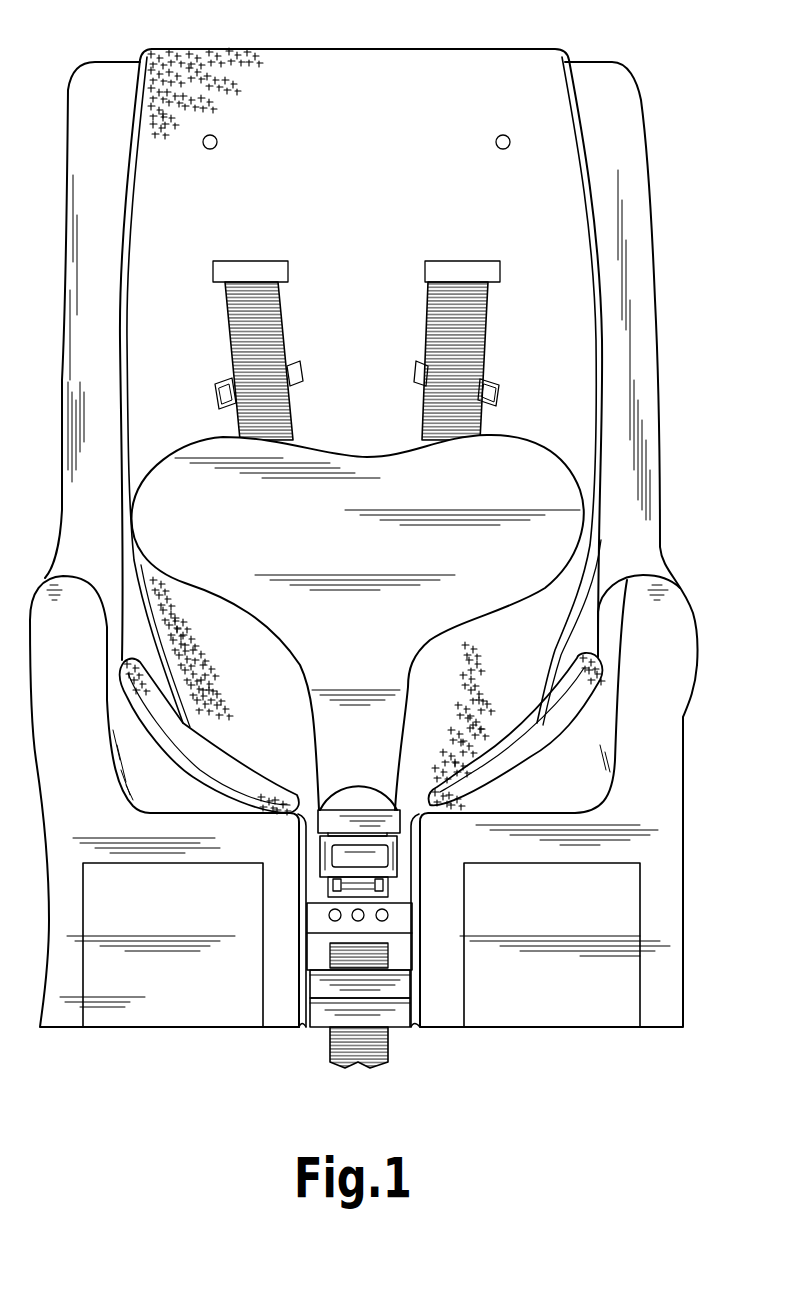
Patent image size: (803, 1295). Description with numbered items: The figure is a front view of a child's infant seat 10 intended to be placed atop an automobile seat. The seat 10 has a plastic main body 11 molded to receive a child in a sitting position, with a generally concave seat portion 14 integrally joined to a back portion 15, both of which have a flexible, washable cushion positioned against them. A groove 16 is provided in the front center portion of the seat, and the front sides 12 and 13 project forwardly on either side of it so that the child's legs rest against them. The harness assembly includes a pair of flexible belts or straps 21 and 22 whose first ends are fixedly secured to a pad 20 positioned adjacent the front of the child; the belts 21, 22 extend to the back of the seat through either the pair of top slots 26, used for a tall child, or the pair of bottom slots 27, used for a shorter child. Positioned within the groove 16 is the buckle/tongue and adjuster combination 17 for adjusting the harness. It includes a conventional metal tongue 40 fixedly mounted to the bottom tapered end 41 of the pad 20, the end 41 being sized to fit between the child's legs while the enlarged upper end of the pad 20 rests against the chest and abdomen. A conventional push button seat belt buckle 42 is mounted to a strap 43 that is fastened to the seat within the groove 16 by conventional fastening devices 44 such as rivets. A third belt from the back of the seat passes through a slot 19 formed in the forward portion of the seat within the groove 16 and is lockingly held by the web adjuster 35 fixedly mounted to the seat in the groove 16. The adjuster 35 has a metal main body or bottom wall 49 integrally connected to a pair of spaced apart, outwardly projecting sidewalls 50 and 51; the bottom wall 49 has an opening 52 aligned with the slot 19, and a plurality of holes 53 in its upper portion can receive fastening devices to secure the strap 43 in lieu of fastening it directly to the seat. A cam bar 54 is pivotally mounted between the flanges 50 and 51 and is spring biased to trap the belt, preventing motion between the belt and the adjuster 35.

The child's infant seat 10 is at (393, 296).
The main body 11 is at (631, 363).
The front side 12 is at (164, 819).
The front side 13 is at (558, 820).
The seat portion 14 is at (362, 734).
The back portion 15 is at (361, 398).
The groove 16 is at (341, 1065).
The buckle/tongue and adjuster combination 17 is at (323, 920).
The slot 19 is at (380, 936).
The pad 20 is at (357, 619).
The belt 21 is at (277, 361).
The belt 22 is at (437, 361).
The top slots 26 is at (374, 268).
The bottom slots 27 is at (375, 385).
The web adjuster 35 is at (330, 950).
The tongue 40 is at (375, 797).
The bottom tapered end 41 is at (342, 778).
The push button seat belt buckle 42 is at (387, 853).
The strap 43 is at (391, 877).
The fastening devices 44 is at (393, 892).
The main body 49 is at (415, 922).
The sidewall 50 is at (341, 984).
The sidewall 51 is at (387, 987).
The opening 52 is at (318, 916).
The holes 53 is at (306, 898).
The cam bar 54 is at (371, 1035).